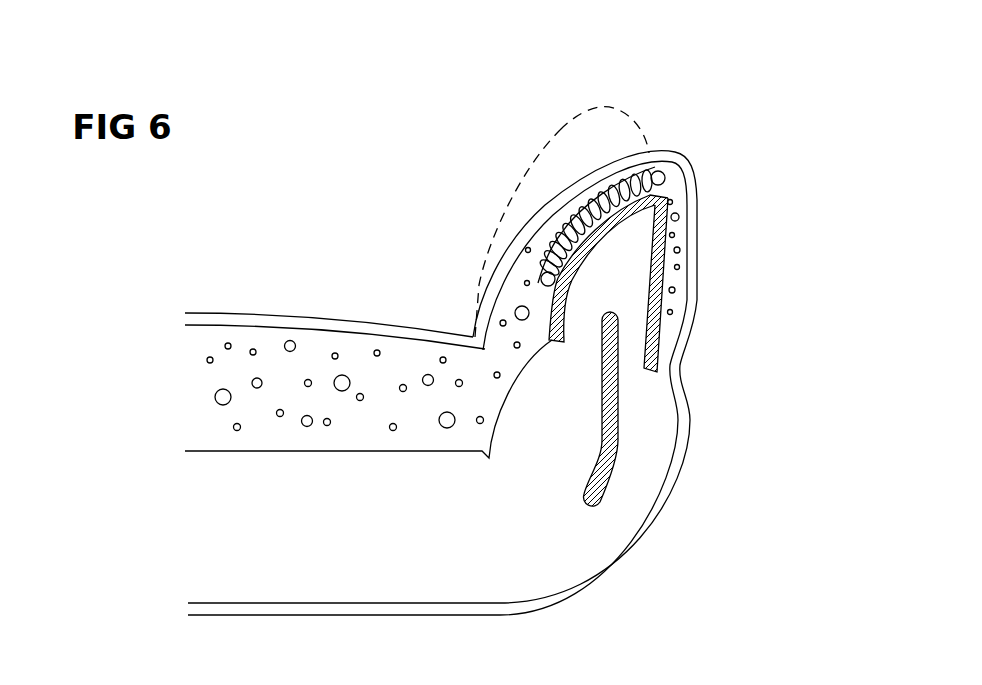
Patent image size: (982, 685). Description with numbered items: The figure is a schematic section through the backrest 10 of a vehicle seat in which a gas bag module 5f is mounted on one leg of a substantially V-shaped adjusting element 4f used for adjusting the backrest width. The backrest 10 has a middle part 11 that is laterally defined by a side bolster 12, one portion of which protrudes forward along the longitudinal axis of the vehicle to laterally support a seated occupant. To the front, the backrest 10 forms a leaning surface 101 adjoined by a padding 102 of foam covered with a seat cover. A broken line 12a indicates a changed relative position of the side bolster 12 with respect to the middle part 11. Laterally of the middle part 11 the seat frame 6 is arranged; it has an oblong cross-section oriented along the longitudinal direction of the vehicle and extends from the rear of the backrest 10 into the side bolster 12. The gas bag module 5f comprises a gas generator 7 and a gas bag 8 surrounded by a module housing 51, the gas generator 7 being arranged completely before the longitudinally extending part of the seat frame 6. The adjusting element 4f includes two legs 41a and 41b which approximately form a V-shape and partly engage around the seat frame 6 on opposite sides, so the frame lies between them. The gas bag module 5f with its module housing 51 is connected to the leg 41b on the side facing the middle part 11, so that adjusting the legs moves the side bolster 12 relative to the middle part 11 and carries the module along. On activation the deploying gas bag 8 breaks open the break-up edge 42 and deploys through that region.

The backrest 10 is at (625, 592).
The middle part 11 is at (388, 329).
The leaning surface 101 is at (298, 322).
The padding 102 is at (218, 377).
The side bolster 12 is at (484, 247).
The broken line 12a is at (603, 98).
The gas generator 7 is at (502, 255).
The module housing 51 is at (555, 208).
The gas bag module 5f is at (541, 243).
The gas bag 8 is at (587, 180).
The break-up edge 42 is at (657, 197).
The leg 41a is at (665, 298).
The leg 41b is at (560, 300).
The adjusting element 4f is at (682, 273).
The seat frame 6 is at (605, 485).